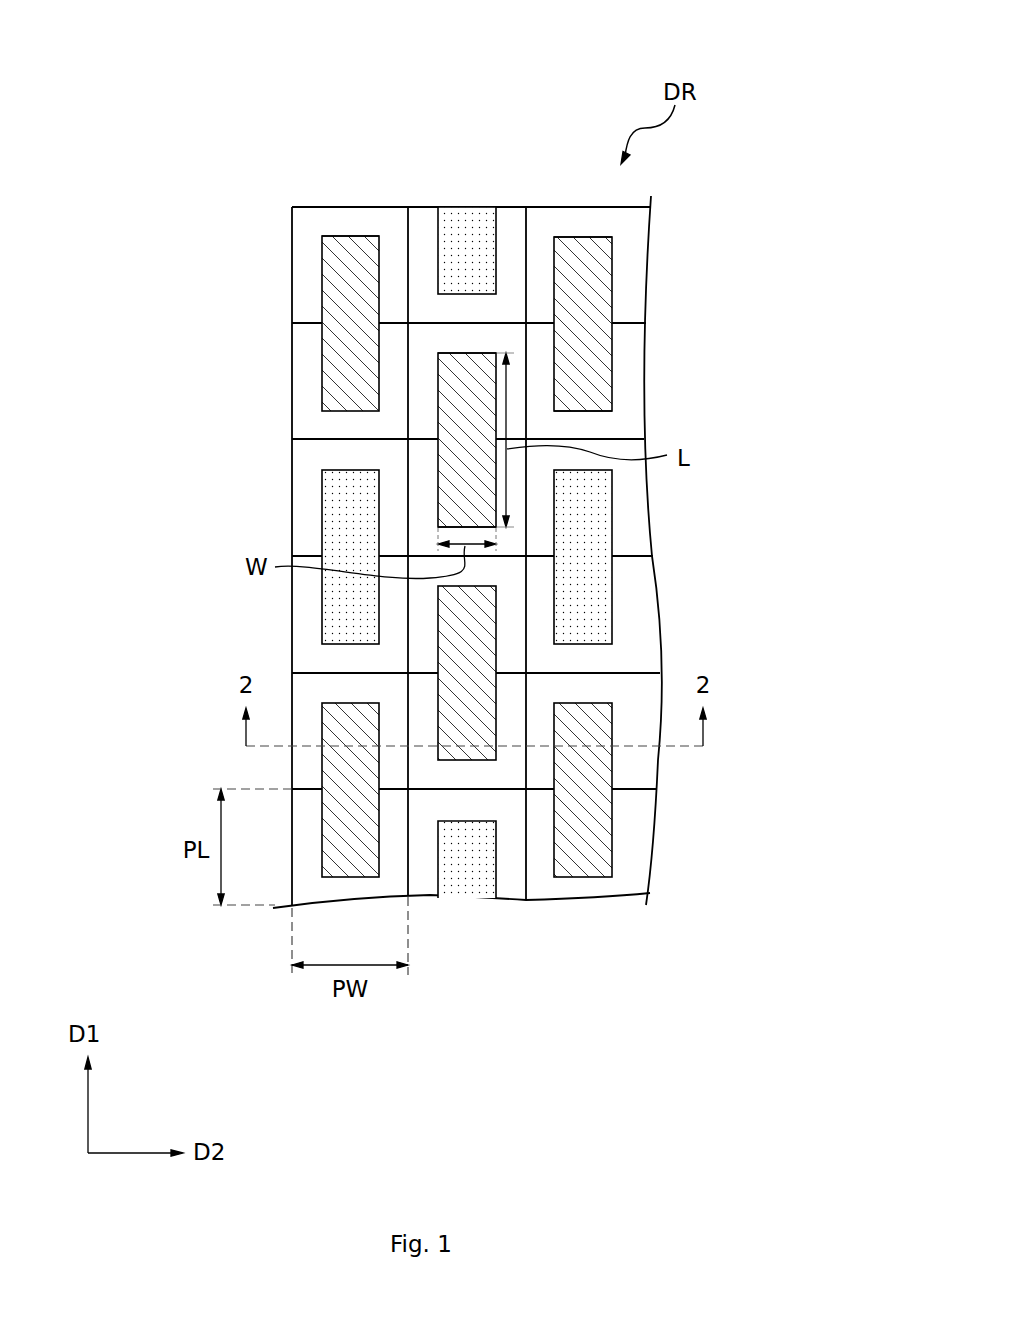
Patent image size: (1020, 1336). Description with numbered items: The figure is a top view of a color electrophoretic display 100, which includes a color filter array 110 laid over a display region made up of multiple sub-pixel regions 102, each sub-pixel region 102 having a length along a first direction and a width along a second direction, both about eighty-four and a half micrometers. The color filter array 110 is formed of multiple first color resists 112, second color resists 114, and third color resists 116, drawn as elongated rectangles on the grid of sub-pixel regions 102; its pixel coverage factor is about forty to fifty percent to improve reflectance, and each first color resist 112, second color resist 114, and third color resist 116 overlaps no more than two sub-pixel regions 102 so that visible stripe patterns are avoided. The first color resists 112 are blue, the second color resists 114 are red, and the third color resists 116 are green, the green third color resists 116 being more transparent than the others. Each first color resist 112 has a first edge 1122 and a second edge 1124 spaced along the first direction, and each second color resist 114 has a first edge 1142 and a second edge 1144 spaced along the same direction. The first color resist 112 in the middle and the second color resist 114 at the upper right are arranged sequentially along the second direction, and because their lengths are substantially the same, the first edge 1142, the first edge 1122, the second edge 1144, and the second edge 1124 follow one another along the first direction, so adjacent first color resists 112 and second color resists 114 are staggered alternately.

The color electrophoretic display 100 is at (178, 96).
The sub-pixel region 102 is at (303, 207).
The color filter array 110 is at (543, 454).
The first color resist 112 is at (443, 430).
The second color resist 114 is at (356, 241).
The third color resist 116 is at (467, 217).
The first edge 1122 is at (445, 527).
The second edge 1124 is at (463, 352).
The first edge 1142 is at (344, 237).
The second edge 1144 is at (588, 237).